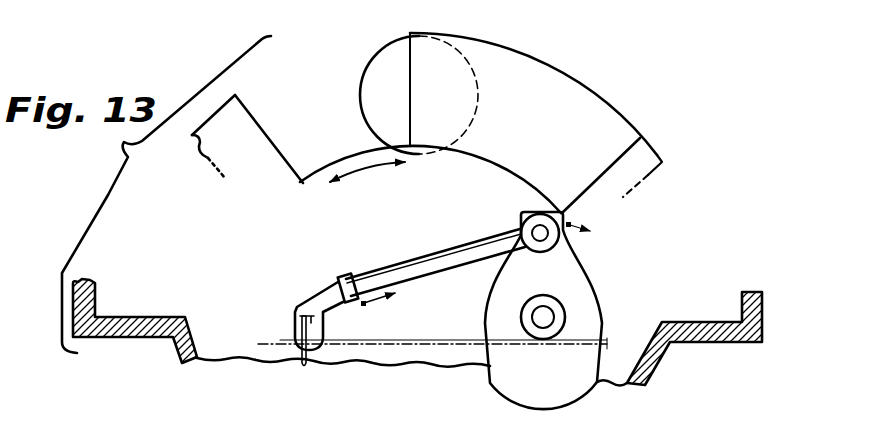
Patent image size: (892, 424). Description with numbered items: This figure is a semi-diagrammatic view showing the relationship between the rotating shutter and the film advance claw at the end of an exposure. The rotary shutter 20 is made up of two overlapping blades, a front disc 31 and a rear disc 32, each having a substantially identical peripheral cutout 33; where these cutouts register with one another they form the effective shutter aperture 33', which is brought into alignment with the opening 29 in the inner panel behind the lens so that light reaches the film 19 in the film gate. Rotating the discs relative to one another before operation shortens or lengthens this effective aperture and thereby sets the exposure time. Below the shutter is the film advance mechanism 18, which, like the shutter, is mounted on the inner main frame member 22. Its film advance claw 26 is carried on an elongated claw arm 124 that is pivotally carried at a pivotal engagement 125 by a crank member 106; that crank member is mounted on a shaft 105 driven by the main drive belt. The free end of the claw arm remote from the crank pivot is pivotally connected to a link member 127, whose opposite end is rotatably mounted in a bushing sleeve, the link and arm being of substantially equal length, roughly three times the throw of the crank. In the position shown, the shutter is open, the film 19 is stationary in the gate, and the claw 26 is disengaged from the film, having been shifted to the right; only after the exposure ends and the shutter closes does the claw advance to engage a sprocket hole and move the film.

The film advance mechanism 18 is at (572, 317).
The film 19 is at (447, 347).
The rotary shutter 20 is at (640, 113).
The inner main frame member 22 is at (763, 320).
The film advance claw 26 is at (354, 300).
The opening 29 is at (380, 73).
The front disc 31 is at (562, 82).
The rear disc 32 is at (650, 158).
The peripheral cutout 33 is at (601, 171).
The effective shutter aperture 33' is at (316, 112).
The shaft 105 is at (544, 318).
The crank member 106 is at (578, 393).
The claw arm 124 is at (472, 242).
The pivotal engagement 125 is at (540, 231).
The link member 127 is at (302, 364).